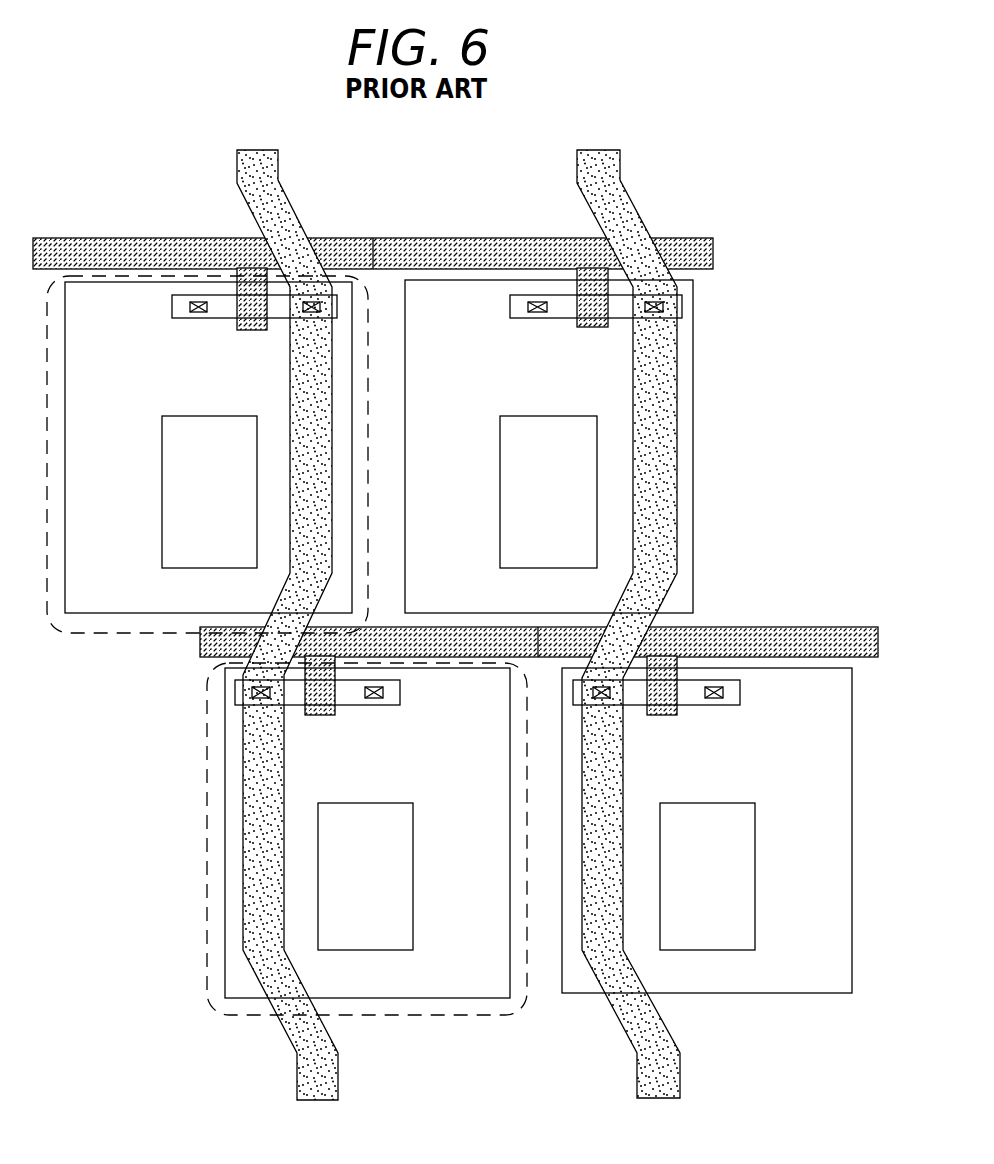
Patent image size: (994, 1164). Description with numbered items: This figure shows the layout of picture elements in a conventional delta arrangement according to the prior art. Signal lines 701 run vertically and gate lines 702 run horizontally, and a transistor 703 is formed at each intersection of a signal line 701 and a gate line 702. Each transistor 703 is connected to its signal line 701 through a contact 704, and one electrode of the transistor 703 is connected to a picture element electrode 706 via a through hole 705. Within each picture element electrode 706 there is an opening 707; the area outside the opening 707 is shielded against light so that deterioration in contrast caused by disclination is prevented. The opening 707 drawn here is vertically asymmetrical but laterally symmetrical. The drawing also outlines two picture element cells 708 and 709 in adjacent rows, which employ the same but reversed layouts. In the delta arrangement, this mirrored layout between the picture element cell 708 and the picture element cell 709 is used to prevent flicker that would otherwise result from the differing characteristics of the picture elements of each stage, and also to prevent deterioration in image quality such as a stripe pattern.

The signal line 701 is at (662, 388).
The gate line 702 is at (703, 242).
The transistor 703 is at (593, 313).
The contact 704 is at (680, 299).
The through hole 705 is at (534, 318).
The picture element electrode 706 is at (693, 455).
The opening 707 is at (500, 514).
The picture element cell 708 is at (100, 633).
The picture element cell 709 is at (207, 825).